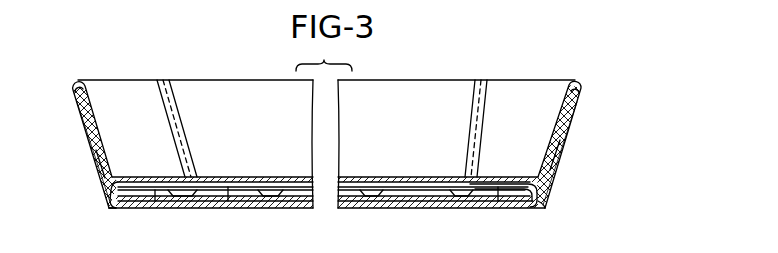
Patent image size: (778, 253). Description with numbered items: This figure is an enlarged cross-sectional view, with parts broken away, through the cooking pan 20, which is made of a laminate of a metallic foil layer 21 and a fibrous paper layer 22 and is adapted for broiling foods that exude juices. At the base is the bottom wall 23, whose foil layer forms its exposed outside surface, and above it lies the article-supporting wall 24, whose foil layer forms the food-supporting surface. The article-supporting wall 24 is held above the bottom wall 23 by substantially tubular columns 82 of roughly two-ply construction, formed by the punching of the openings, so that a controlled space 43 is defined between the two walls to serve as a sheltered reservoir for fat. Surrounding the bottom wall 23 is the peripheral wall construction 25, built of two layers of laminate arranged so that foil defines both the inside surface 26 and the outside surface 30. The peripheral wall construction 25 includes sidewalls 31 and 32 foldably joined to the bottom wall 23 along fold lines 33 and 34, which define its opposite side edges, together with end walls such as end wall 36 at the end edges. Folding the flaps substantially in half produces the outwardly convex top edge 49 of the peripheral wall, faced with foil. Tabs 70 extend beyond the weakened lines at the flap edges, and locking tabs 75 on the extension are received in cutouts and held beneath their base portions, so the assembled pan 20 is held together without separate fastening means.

The cooking pan 20 is at (581, 50).
The metallic foil layer 21 is at (97, 108).
The fibrous paper layer 22 is at (100, 162).
The bottom wall 23 is at (427, 198).
The article-supporting wall 24 is at (236, 178).
The peripheral wall construction 25 is at (584, 95).
The inside foil surface of peripheral wall 26 is at (552, 107).
The outside foil surface of peripheral wall 30 is at (571, 130).
The sidewall 31 is at (88, 130).
The sidewall 32 is at (562, 145).
The fold line 33 is at (118, 209).
The fold line 34 is at (544, 209).
The end wall 36 is at (380, 92).
The controlled space 43 is at (313, 206).
The top edge 49 is at (78, 82).
The tabs 70 is at (232, 197).
The locking tabs 75 is at (553, 181).
The tubular column 82 is at (157, 198).